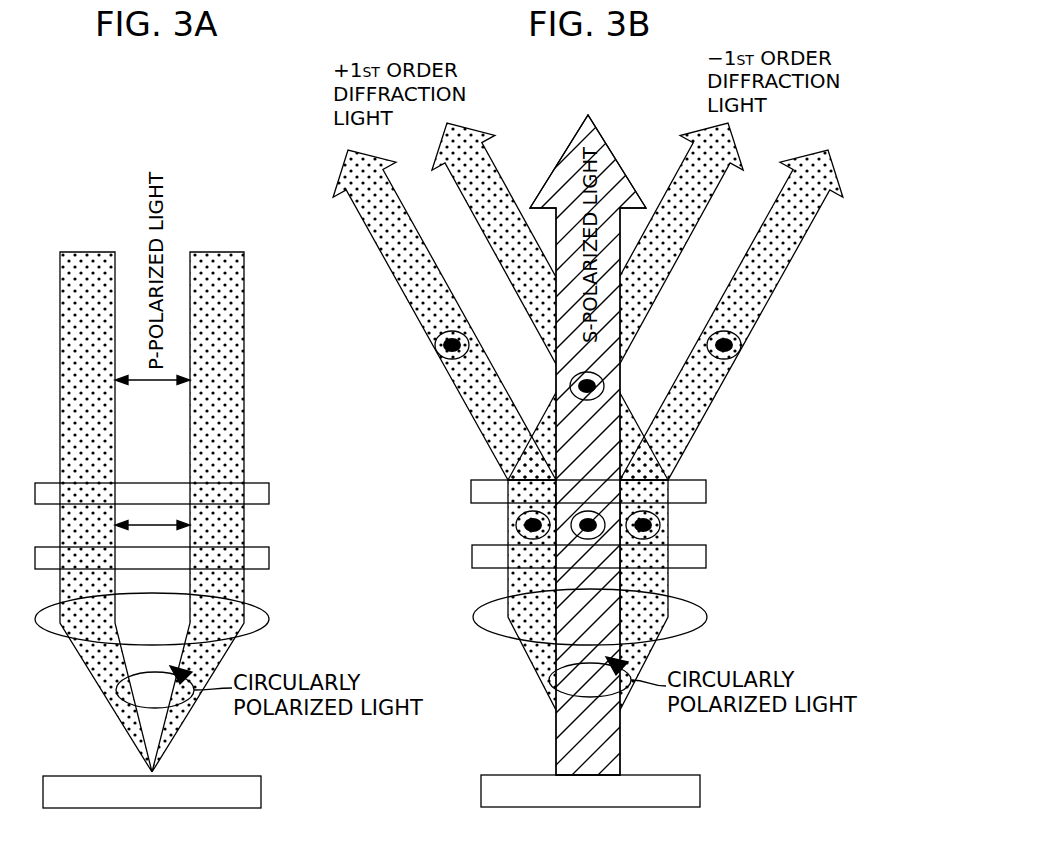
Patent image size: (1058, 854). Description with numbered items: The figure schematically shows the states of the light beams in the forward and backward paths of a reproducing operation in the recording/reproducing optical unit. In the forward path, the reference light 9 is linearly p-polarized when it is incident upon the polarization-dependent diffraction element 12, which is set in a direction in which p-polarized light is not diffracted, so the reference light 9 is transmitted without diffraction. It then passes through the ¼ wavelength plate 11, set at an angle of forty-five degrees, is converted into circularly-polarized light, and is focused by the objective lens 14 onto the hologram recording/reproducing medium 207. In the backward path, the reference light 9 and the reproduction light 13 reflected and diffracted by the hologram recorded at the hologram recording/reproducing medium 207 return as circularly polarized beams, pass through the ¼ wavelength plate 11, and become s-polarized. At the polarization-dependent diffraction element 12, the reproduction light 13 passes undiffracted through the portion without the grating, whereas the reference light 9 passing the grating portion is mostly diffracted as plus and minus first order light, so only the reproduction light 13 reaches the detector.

In FIG. 3A, the reference light 9 is at (95, 252).
In FIG. 3B, the reference light 9 is at (497, 254).
In FIG. 3A, the ¼ wavelength plate 11 is at (263, 558).
In FIG. 3B, the ¼ wavelength plate 11 is at (700, 557).
In FIG. 3A, the polarization-dependent diffraction element 12 is at (263, 494).
In FIG. 3B, the polarization-dependent diffraction element 12 is at (700, 492).
In FIG. 3B, the reproduction light 13 is at (622, 172).
In FIG. 3A, the objective lens 14 is at (269, 612).
In FIG. 3B, the objective lens 14 is at (707, 612).
In FIG. 3A, the hologram recording/reproducing medium 207 is at (258, 786).
In FIG. 3B, the hologram recording/reproducing medium 207 is at (697, 785).